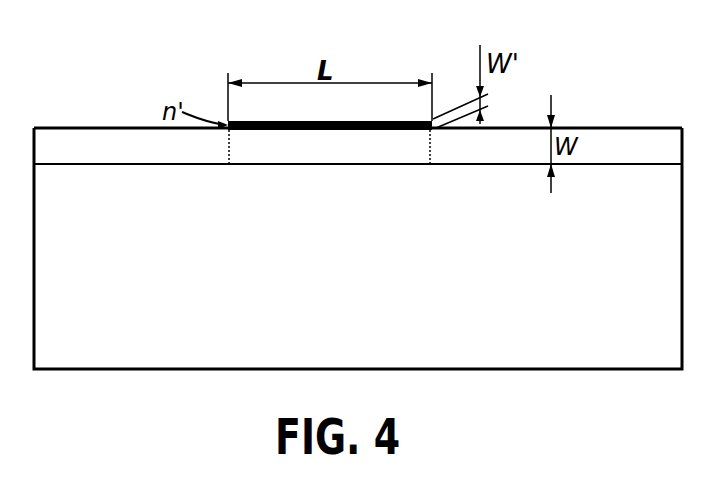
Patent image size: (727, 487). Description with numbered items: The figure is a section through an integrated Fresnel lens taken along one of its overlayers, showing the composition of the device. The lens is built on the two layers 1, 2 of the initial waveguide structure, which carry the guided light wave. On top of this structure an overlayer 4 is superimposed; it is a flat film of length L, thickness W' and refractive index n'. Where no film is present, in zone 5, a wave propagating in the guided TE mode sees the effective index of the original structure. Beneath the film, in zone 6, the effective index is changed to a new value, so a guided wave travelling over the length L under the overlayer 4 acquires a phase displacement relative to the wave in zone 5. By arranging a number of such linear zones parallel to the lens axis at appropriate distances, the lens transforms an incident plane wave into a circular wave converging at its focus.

The waveguide layer 1 is at (118, 371).
The waveguide layer 2 is at (72, 128).
The overlayer 4 is at (231, 121).
The zone 5 is at (118, 153).
The zone 6 is at (255, 153).